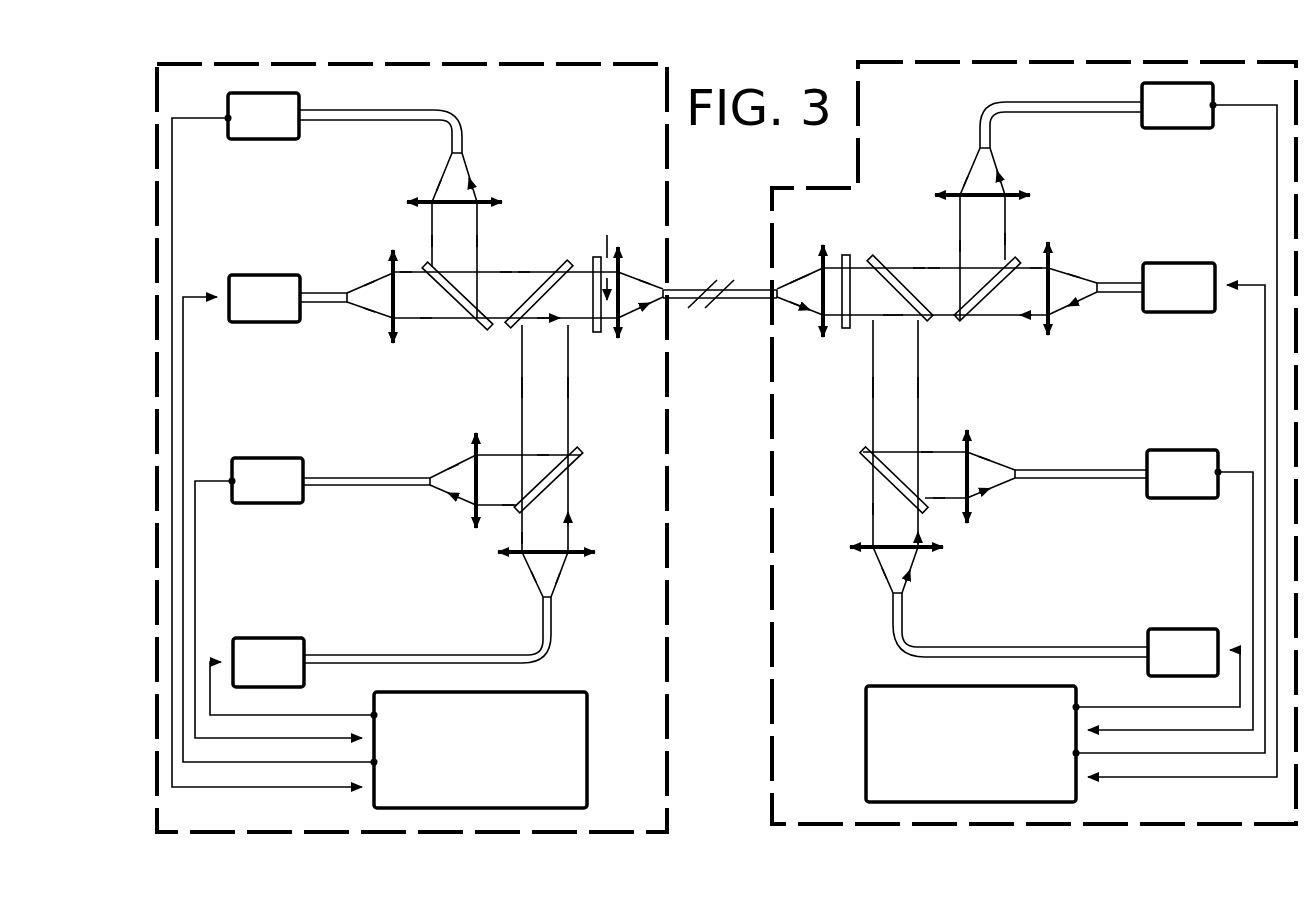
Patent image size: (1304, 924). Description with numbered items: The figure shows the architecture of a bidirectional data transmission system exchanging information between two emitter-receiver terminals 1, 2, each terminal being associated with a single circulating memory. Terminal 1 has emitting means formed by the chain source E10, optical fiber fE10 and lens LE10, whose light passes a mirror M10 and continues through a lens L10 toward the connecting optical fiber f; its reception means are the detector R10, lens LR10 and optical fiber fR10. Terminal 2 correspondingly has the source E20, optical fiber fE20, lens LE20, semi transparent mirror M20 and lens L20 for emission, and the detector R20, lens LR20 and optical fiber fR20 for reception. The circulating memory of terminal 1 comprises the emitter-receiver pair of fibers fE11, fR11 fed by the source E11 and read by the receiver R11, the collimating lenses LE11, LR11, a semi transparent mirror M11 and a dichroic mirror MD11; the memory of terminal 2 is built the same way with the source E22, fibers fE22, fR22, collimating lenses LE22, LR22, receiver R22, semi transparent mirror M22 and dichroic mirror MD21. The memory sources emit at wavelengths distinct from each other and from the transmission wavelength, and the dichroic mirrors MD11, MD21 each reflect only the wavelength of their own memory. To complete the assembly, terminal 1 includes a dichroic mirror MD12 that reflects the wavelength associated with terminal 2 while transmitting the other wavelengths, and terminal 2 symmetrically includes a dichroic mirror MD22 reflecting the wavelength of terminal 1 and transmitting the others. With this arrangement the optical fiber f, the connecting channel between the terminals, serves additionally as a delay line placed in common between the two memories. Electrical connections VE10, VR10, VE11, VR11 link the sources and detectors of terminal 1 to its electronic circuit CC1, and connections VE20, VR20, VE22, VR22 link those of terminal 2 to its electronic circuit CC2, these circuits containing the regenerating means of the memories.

The emitter-receiver terminal 1 is at (660, 645).
The emitter-receiver terminal 2 is at (780, 643).
The detector R10 is at (262, 144).
The receiver output line VR10 is at (215, 115).
The optical fiber fR10 is at (383, 95).
The lens LR10 is at (483, 185).
The source E10 is at (278, 271).
The light source control line VE10 is at (200, 305).
The optical fiber fE10 is at (318, 300).
The lens LE10 is at (388, 268).
The semi-transparent mirror M10 is at (460, 325).
The dichroic mirror MD11 is at (562, 265).
The dichroic mirror MD12 is at (587, 257).
The coupling lens L10 is at (623, 300).
The optical fiber f is at (697, 284).
The receiver R11 is at (280, 454).
The optical fiber fR11 is at (384, 474).
The collimating lens LR11 is at (470, 449).
The receiver output line VR11 is at (207, 486).
The semi transparent mirror M11 is at (584, 455).
The collimating lens LE11 is at (575, 540).
The source E11 is at (281, 630).
The optical fiber fE11 is at (398, 654).
The light source control line VE11 is at (210, 680).
The electronic circuit CC1 is at (587, 725).
The lens L20 is at (817, 254).
The dichroic mirror MD21 is at (860, 230).
The dichroic mirror MD22 is at (892, 261).
The semi transparent mirror M20 is at (982, 318).
The lens LR20 is at (1004, 179).
The optical fiber fR20 is at (1095, 102).
The detector R20 is at (1160, 133).
The receiver output line VR20 is at (1232, 104).
The source E20 is at (1196, 261).
The optical fiber fE20 is at (1133, 276).
The light source lens LE20 is at (1053, 303).
The light source control line VE20 is at (1258, 315).
The semi-transparent mirror M22 is at (865, 456).
The light source lens LE22 is at (871, 539).
The receiver lens LR22 is at (971, 442).
The receiver optical fiber fR22 is at (1106, 469).
The receiver R22 is at (1192, 440).
The receiver output line VR22 is at (1250, 505).
The light source E22 is at (1194, 624).
The light source optical fiber fE22 is at (1072, 630).
The light source control line VE22 is at (1238, 671).
The electronic circuit CC2 is at (864, 724).